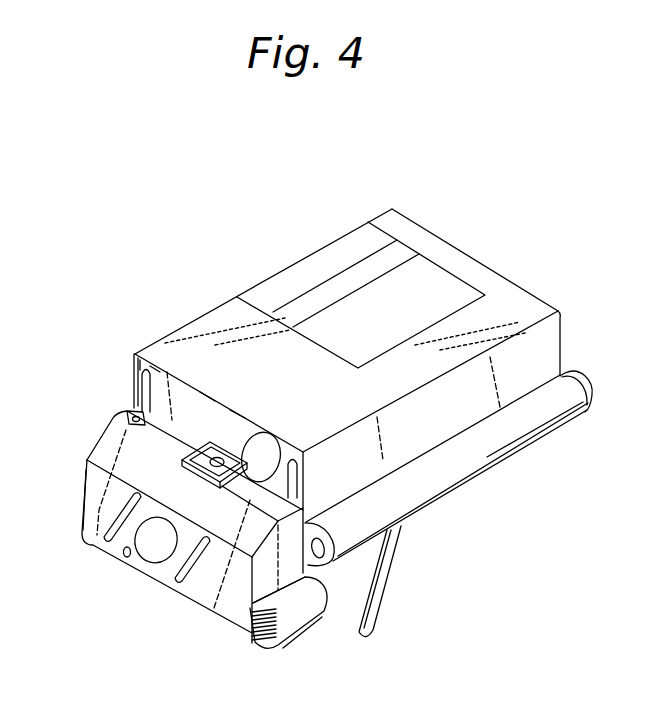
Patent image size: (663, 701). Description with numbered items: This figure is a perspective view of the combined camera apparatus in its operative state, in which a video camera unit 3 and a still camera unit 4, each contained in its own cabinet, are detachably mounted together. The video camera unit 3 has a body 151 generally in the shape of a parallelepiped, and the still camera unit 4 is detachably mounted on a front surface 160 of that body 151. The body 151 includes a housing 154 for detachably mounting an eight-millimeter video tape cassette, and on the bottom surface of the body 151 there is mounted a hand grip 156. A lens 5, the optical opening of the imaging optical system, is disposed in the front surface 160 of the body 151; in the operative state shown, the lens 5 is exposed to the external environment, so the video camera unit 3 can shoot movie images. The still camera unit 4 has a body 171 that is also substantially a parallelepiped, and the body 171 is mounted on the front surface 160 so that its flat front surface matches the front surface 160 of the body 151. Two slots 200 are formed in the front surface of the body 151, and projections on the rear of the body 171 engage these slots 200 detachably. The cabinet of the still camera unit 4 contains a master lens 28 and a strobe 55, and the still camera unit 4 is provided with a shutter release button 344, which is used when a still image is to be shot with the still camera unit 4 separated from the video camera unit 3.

The video camera unit 3 is at (228, 287).
The still camera unit 4 is at (160, 603).
The lens 5 is at (258, 445).
The master lens 28 is at (152, 548).
The strobe 55 is at (250, 625).
The body 151 is at (183, 345).
The housing 154 is at (432, 283).
The hand grip 156 is at (394, 571).
The front surface 160 is at (186, 405).
The body 171 is at (87, 506).
The slots 200 is at (140, 381).
The shutter release button 344 is at (128, 413).